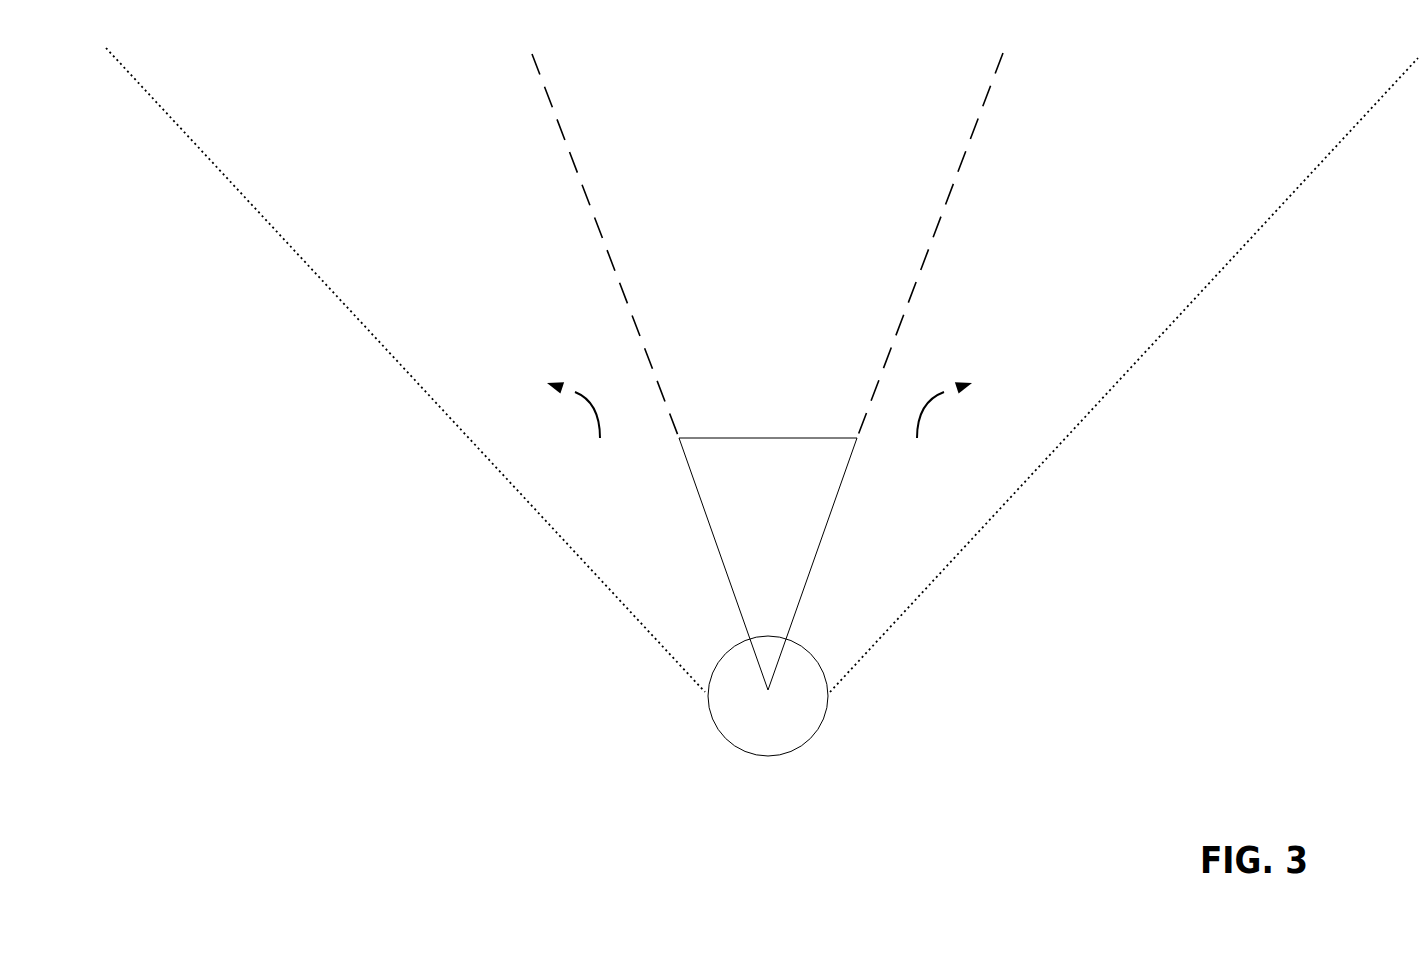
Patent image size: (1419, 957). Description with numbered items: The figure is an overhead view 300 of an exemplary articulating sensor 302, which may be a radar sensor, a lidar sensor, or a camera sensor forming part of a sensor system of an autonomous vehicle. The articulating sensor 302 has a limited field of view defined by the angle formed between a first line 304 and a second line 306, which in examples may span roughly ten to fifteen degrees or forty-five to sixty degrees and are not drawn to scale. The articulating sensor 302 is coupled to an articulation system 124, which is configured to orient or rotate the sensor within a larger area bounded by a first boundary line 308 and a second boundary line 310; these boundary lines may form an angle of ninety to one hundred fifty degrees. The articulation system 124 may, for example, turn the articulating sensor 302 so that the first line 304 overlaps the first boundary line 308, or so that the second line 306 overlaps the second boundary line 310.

The overhead view 300 is at (190, 410).
The articulating sensor 302 is at (712, 525).
The first line 304 is at (575, 166).
The second line 306 is at (960, 167).
The first boundary line 308 is at (433, 400).
The second boundary line 310 is at (1104, 395).
The articulation system 124 is at (718, 726).